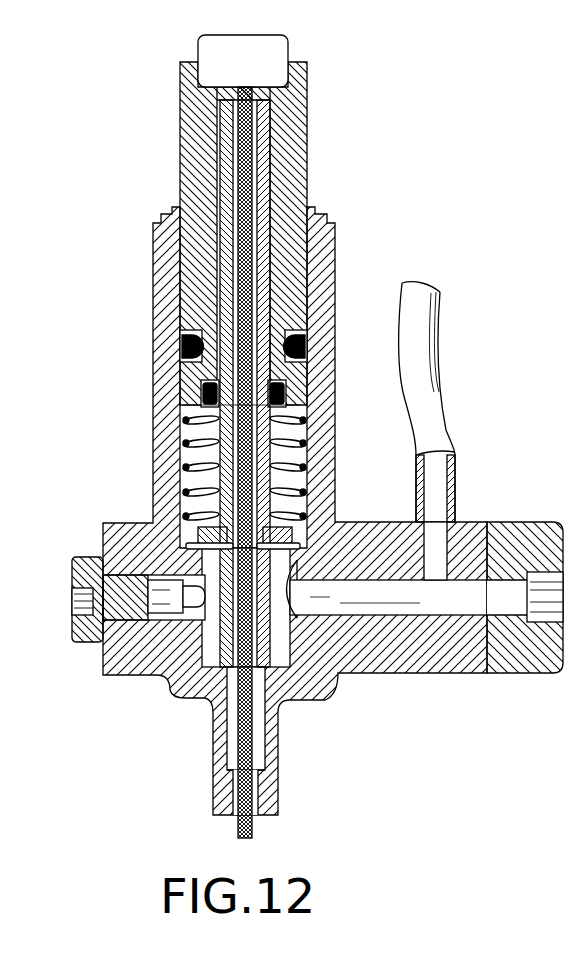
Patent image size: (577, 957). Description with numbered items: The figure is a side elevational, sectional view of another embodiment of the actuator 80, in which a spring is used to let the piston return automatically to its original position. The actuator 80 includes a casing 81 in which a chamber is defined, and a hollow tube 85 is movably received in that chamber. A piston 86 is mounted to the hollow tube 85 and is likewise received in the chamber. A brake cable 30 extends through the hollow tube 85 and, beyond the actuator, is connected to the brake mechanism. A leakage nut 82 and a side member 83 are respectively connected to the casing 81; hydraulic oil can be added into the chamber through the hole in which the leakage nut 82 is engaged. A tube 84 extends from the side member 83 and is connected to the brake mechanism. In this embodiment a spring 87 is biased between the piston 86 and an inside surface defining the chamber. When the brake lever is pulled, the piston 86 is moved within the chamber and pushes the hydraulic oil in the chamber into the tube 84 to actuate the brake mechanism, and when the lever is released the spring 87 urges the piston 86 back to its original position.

The brake cable 30 is at (240, 790).
The actuator 80 is at (308, 436).
The casing 81 is at (318, 677).
The leakage nut 82 is at (90, 560).
The side member 83 is at (540, 530).
The tube 84 is at (425, 372).
The hollow tube 85 is at (215, 255).
The piston 86 is at (297, 131).
The spring 87 is at (185, 440).